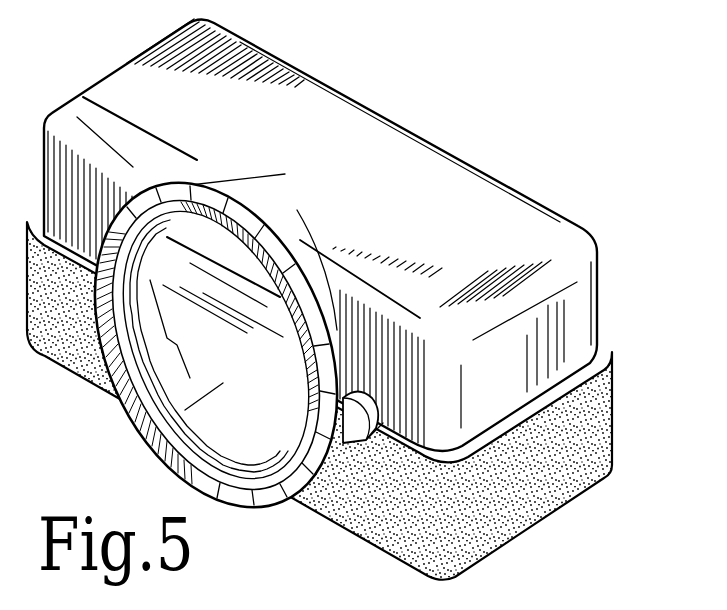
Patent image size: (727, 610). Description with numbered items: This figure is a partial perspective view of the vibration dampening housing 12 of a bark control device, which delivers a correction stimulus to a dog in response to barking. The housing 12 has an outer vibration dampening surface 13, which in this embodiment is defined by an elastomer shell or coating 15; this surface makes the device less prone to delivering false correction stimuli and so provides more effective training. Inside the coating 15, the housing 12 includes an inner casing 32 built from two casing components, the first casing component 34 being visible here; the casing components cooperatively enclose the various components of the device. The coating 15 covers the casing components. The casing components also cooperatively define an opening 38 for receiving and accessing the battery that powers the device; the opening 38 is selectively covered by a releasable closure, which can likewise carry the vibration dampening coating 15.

The vibration dampening housing 12 is at (604, 292).
The outer vibration dampening surface 13 is at (612, 418).
The elastomer shell or coating 15 is at (524, 483).
The inner casing 32 is at (401, 170).
The first casing component 34 is at (232, 102).
The opening 38 is at (160, 433).